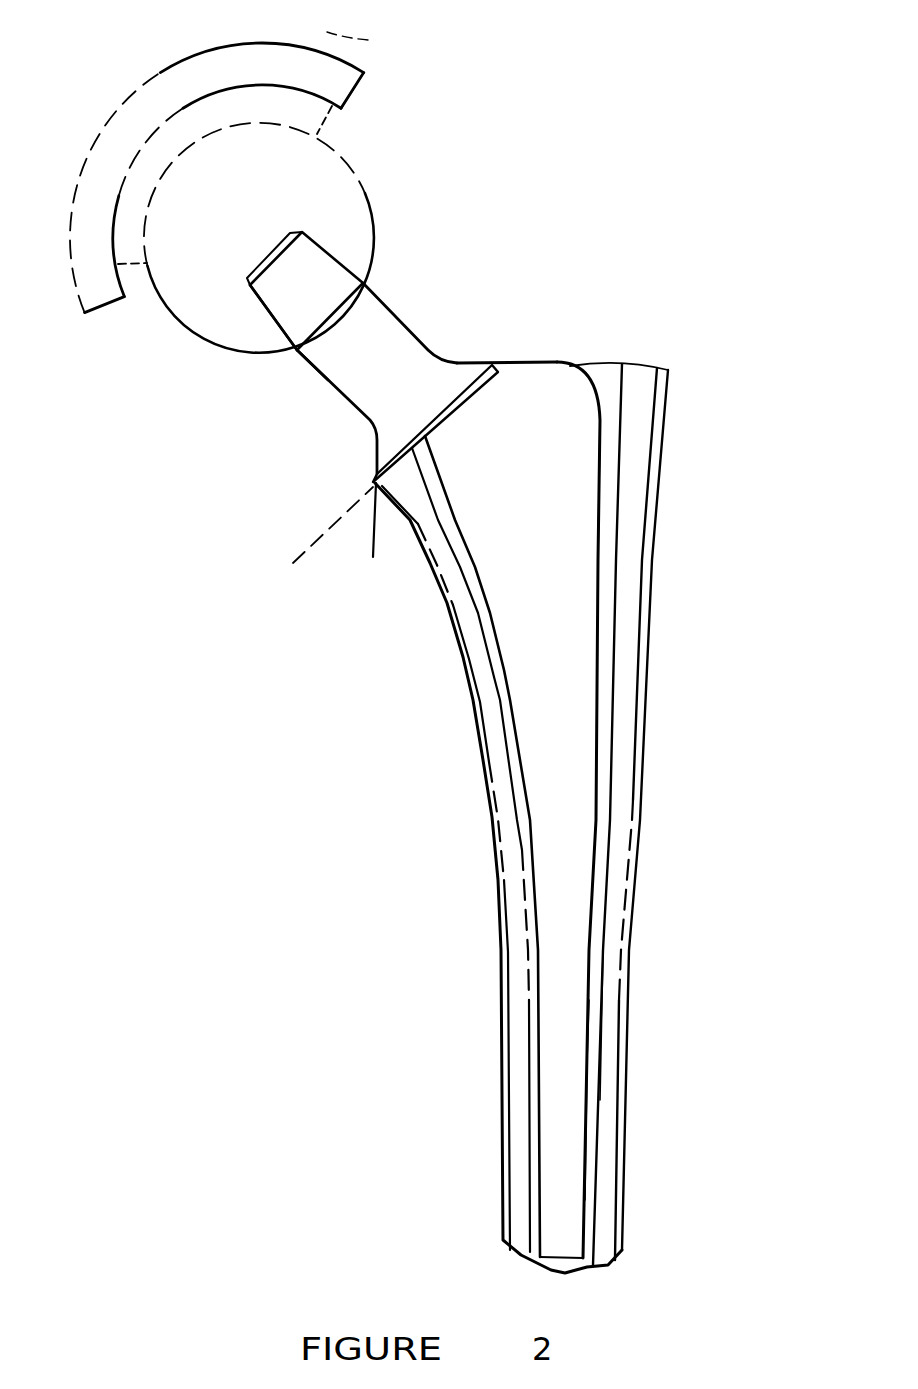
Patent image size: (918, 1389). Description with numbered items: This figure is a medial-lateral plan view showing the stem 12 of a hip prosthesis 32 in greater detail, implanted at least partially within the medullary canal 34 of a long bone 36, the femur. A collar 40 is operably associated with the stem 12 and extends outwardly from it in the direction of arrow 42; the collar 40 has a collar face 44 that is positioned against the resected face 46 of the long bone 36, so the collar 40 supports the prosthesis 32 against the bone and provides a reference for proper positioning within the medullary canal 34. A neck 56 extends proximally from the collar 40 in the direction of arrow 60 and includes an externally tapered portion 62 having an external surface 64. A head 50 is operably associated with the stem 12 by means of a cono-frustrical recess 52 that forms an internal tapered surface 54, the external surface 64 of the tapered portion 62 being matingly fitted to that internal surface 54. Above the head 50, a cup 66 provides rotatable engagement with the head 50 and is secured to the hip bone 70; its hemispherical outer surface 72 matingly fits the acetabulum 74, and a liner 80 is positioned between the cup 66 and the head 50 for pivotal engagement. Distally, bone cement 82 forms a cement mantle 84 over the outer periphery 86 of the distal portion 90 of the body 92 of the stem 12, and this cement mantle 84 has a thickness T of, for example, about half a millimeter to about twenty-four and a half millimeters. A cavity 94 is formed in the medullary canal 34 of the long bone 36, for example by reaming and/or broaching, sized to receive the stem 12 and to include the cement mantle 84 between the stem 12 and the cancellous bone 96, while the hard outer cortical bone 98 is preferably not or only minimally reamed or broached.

The stem 12 is at (455, 1018).
The hip prosthesis 32 is at (92, 84).
The medullary canal 34 is at (586, 740).
The long bone 36 is at (634, 921).
The collar 40 is at (383, 544).
The arrow 42 is at (430, 395).
The collar face 44 is at (457, 420).
The resected face 46 is at (312, 545).
The head 50 is at (366, 193).
The cono-frustrical recess 52 is at (355, 322).
The internal tapered surface 54 is at (265, 312).
The neck 56 is at (340, 387).
The arrow 60 is at (345, 356).
The externally tapered portion 62 is at (296, 347).
The external surface 64 is at (262, 305).
The cup 66 is at (360, 90).
The hip bone 70 is at (386, 25).
The hemispherical outer surface 72 is at (155, 70).
The acetabulum 74 is at (370, 56).
The liner 80 is at (323, 118).
The bone cement 82 is at (597, 1023).
The cement mantle 84 is at (603, 993).
The outer periphery 86 is at (590, 1078).
The distal portion 90 is at (538, 1142).
The body 92 is at (600, 510).
The cavity 94 is at (588, 315).
The cancellous bone 96 is at (620, 860).
The cortical bone 98 is at (640, 785).
The thickness T is at (557, 1158).